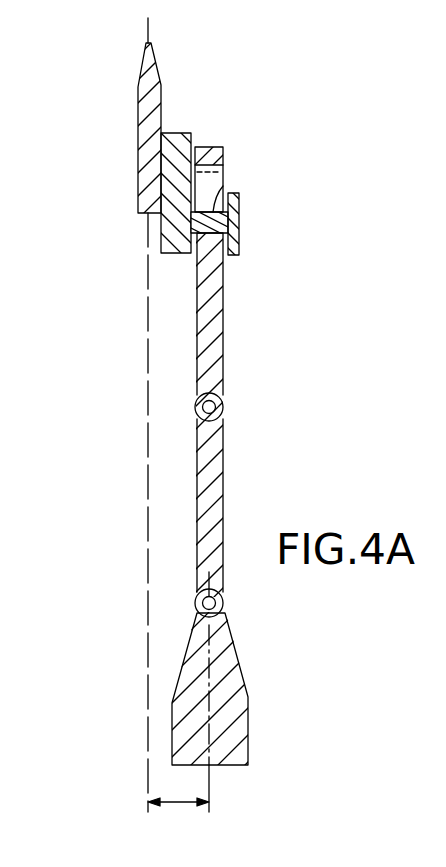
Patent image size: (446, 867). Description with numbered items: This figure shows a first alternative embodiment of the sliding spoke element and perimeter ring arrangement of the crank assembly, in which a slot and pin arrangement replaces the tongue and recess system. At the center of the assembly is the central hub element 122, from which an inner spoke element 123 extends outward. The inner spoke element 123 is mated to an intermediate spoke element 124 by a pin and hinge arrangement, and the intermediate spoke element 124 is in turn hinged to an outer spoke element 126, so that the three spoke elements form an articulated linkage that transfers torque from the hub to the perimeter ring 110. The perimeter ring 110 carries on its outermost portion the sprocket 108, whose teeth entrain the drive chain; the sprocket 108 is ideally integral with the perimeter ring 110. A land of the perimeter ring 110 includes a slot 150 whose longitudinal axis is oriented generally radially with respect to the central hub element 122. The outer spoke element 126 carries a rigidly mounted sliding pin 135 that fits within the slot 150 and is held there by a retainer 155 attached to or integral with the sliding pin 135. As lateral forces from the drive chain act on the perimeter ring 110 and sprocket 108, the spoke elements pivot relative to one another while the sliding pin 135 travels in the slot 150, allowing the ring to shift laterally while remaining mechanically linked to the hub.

The sprocket 108 is at (142, 69).
The perimeter ring 110 is at (179, 255).
The slot 150 is at (234, 198).
The sliding pin 135 is at (226, 182).
The retainer 155 is at (240, 232).
The outer spoke element 126 is at (223, 325).
The intermediate spoke element 124 is at (226, 488).
The inner spoke element 123 is at (237, 652).
The central hub element 122 is at (272, 740).